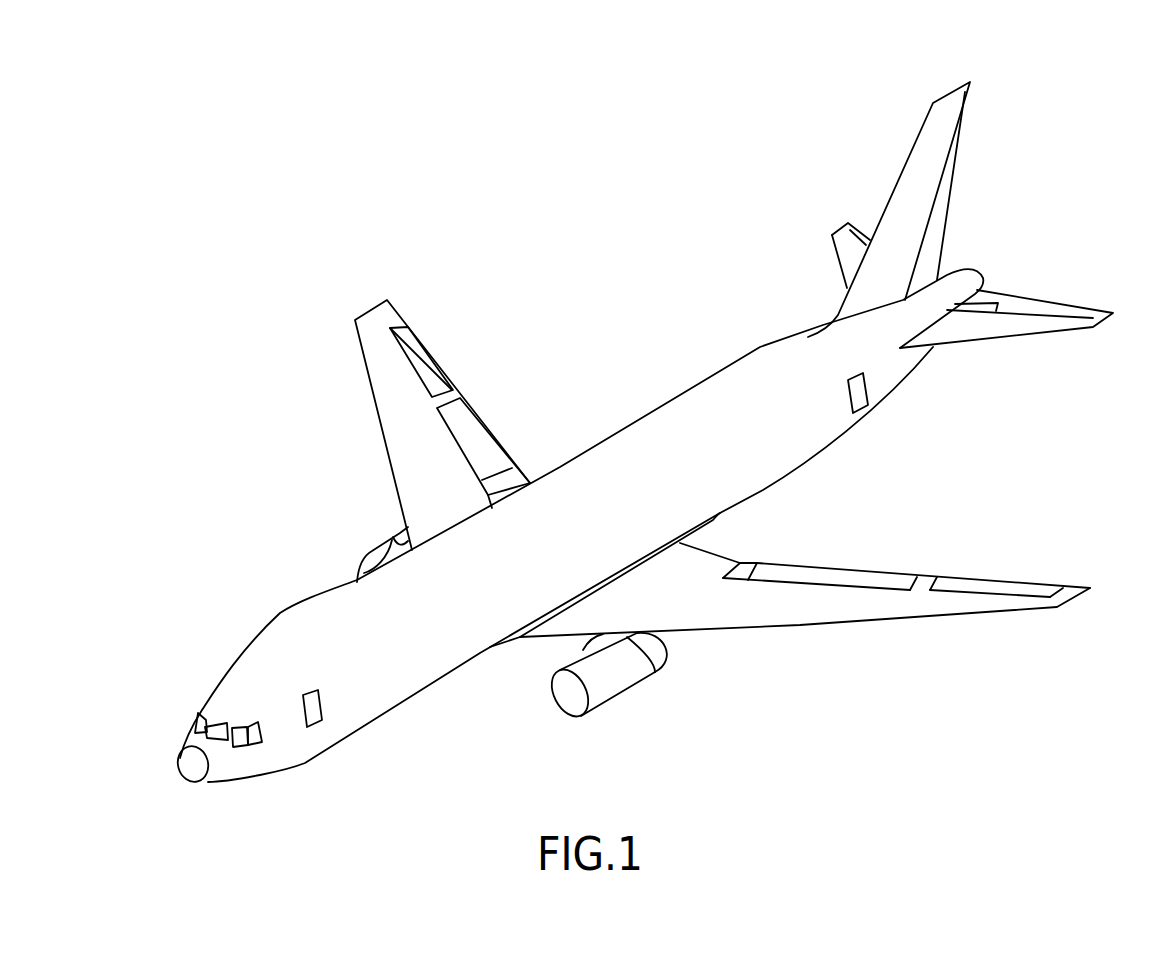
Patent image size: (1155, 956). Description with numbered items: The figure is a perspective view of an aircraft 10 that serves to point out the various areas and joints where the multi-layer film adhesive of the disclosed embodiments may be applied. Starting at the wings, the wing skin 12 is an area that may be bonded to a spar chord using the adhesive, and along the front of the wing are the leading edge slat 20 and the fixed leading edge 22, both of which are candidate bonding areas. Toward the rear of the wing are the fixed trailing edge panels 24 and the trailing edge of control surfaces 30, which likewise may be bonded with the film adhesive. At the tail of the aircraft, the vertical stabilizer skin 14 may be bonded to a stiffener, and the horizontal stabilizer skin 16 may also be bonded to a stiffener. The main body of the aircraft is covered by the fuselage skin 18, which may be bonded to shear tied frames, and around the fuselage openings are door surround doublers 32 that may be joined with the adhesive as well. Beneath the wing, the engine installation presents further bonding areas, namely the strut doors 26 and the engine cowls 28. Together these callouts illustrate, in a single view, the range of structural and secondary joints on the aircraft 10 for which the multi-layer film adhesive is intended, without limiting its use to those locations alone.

The aircraft 10 is at (634, 137).
The wing skin 12 is at (372, 393).
The vertical stabilizer skin 14 is at (907, 162).
The horizontal stabilizer skin 16 is at (832, 237).
The fuselage skin 18 is at (425, 672).
The leading edge slat 20 is at (405, 478).
The fixed leading edge 22 is at (403, 515).
The fixed trailing edge panels 24 is at (792, 612).
The strut doors 26 is at (653, 670).
The engine cowls 28 is at (620, 693).
The trailing edge of control surfaces 30 is at (478, 417).
The door surround doublers 32 is at (860, 410).